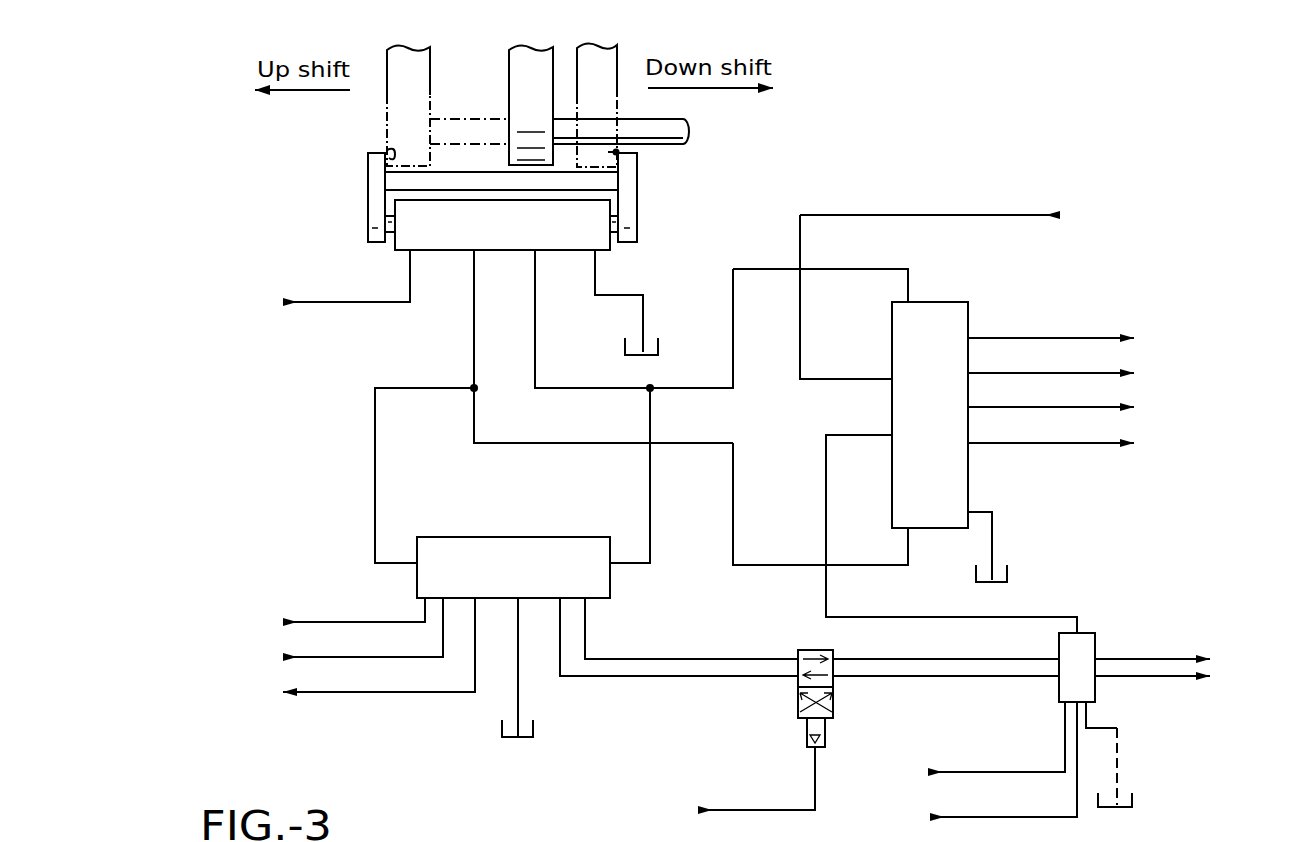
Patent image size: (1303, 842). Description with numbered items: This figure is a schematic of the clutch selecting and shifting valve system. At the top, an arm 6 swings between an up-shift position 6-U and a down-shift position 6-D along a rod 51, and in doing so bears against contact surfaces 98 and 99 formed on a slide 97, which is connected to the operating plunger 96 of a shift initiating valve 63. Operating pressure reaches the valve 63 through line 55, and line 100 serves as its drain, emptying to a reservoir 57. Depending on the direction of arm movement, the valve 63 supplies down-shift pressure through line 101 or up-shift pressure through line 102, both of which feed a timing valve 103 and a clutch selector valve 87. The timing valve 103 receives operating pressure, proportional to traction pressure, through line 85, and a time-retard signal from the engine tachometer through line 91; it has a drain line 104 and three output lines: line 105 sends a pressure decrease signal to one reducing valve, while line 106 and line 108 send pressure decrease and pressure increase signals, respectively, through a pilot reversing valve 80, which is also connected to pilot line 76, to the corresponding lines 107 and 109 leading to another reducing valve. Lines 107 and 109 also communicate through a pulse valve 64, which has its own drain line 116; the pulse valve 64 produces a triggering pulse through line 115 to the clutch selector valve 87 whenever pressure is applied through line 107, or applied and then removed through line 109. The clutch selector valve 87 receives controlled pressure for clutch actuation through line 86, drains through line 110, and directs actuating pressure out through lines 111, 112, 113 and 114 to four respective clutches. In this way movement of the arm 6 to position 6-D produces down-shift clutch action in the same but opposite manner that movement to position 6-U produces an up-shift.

The arm 6 is at (511, 52).
The up-shift position of arm 6-U is at (390, 50).
The down-shift position of arm 6-D is at (617, 52).
The shift rod 51 is at (685, 118).
The contact surface 98 is at (387, 150).
The contact surface 99 is at (618, 153).
The slide 97 is at (637, 192).
The operating plunger 96 is at (386, 232).
The shift initiating valve 63 is at (521, 244).
The line 55 is at (320, 302).
The drain line 100 is at (643, 310).
The reservoir 57 is at (660, 350).
The line 102 is at (866, 269).
The line 101 is at (790, 565).
The line 86 is at (970, 215).
The clutch selector valve 87 is at (939, 445).
The line 111 is at (1110, 332).
The line 112 is at (1110, 370).
The line 113 is at (1110, 405).
The line 114 is at (1110, 441).
The drain line 110 is at (993, 525).
The line 115 is at (1058, 617).
The timing valve 103 is at (529, 585).
The line 85 is at (312, 622).
The line 91 is at (312, 657).
The line 105 is at (310, 692).
The drain line 104 is at (516, 695).
The line 106 is at (676, 658).
The line 108 is at (636, 676).
The line 107 is at (928, 658).
The line 109 is at (930, 677).
The pilot reversing valve 80 is at (798, 704).
The pilot line 76 is at (744, 810).
The pulse valve 64 is at (1058, 688).
The drain line 116 is at (1120, 745).